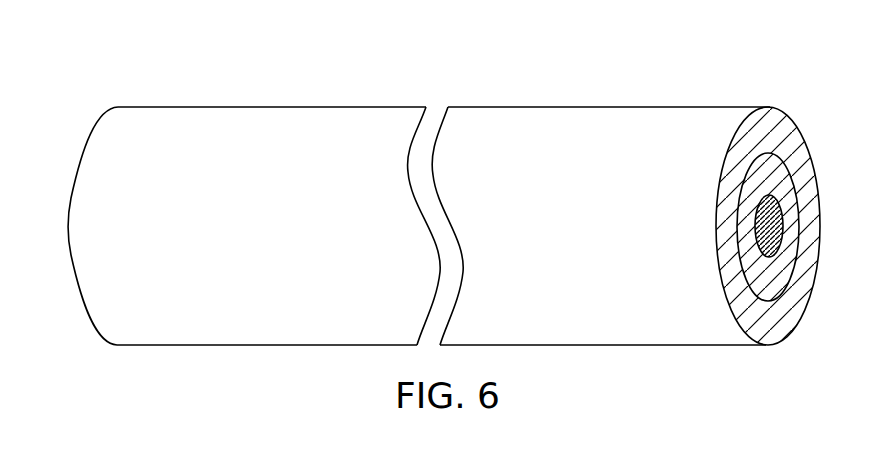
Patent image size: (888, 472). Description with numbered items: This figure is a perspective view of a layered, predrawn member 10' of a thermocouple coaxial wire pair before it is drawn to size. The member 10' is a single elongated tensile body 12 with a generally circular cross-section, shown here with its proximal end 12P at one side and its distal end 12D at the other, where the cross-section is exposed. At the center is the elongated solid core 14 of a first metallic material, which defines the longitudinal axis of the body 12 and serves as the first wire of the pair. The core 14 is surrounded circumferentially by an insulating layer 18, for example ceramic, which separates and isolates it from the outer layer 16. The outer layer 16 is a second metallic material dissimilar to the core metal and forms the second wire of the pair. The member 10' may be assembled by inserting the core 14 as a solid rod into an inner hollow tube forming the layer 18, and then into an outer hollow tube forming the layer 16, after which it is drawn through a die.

The layered (predrawn) member 10' is at (473, 172).
The elongated tensile body 12 is at (533, 106).
The proximal end of cable 12P is at (145, 112).
The distal end of cable 12D is at (768, 106).
The outer layer 16 is at (796, 145).
The insulating layer 18 is at (784, 190).
The core 14 is at (774, 228).